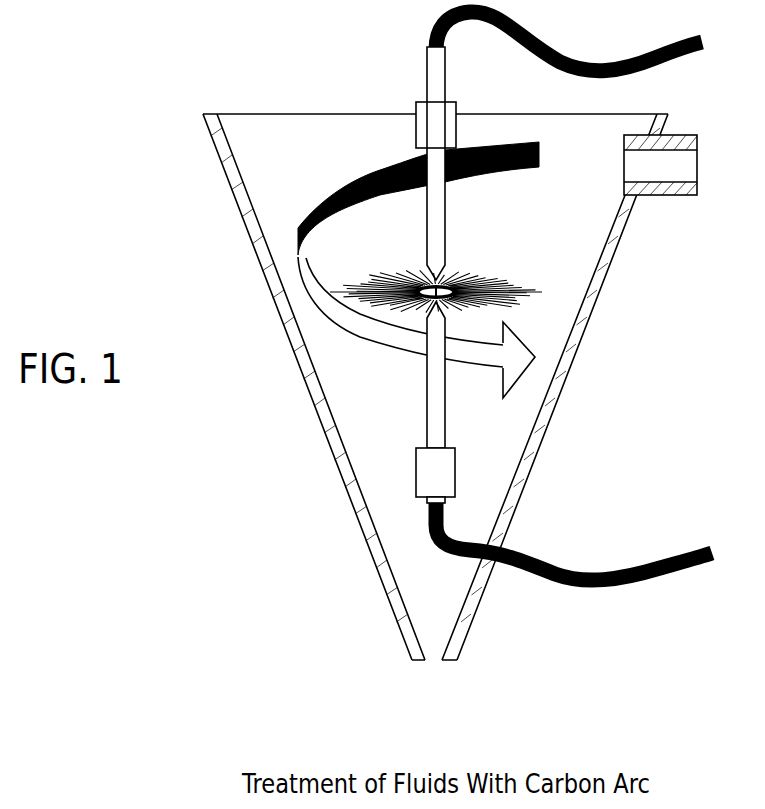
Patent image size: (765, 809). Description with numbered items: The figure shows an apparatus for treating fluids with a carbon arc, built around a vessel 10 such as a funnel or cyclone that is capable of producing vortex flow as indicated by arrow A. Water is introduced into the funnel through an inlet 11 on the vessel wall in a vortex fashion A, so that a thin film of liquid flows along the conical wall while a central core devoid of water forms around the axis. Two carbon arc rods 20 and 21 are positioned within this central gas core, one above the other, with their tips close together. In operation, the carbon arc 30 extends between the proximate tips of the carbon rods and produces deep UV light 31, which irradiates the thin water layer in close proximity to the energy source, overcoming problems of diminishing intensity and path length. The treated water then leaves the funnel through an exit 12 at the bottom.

The vessel 10 is at (528, 465).
The inlet 11 is at (678, 197).
The exit 12 is at (438, 638).
The carbon arc rod 20 is at (427, 67).
The carbon arc rod 21 is at (437, 417).
The carbon arc 30 is at (457, 270).
The deep UV light 31 is at (380, 295).
The arrow indicating vortex flow A is at (513, 360).